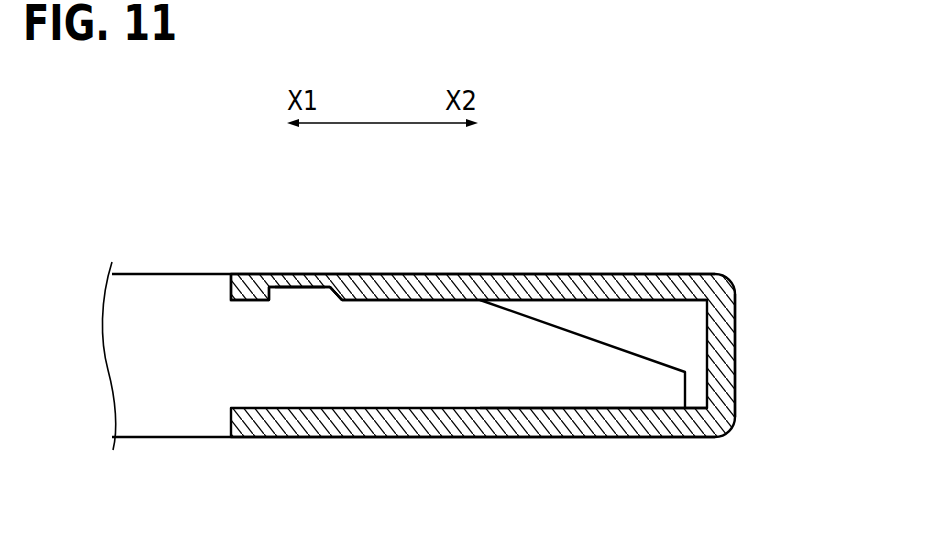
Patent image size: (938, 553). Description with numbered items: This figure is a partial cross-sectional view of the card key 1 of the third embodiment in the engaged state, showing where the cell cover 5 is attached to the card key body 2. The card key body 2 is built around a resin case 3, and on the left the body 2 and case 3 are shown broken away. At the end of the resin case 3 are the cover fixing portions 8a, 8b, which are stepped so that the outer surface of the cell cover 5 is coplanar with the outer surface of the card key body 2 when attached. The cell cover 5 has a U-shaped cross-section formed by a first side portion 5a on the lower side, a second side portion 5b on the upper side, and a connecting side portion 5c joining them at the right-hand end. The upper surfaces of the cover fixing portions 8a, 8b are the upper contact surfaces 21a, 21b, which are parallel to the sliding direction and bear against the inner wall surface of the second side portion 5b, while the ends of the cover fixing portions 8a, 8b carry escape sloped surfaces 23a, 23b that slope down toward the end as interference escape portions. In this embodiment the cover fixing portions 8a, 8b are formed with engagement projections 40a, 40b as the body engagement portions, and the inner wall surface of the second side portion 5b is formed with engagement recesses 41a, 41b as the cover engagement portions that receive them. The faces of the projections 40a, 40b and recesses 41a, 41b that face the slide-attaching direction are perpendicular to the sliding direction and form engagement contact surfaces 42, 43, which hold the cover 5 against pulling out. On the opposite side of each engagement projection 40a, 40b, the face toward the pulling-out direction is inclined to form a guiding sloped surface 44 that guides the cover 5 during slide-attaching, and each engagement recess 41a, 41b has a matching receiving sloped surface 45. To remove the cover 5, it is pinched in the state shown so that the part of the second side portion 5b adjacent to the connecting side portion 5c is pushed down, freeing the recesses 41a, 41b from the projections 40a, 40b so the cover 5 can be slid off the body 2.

The card key 1 is at (740, 208).
The card key body 2 is at (163, 314).
The resin case 3 is at (163, 270).
The cell cover 5 is at (660, 258).
The first side portion 5a is at (438, 438).
The second side portion 5b is at (508, 274).
The connecting side portion 5c is at (736, 350).
The cover fixing portion 8a is at (593, 447).
The cover fixing portion 8b is at (543, 383).
The upper contact surface 21a is at (524, 249).
The upper contact surface 21b is at (425, 298).
The escape sloped surface 23a is at (582, 292).
The escape sloped surface 23b is at (583, 335).
The engagement projection 40a is at (302, 410).
The engagement projection 40b is at (302, 292).
The engagement recess 41a is at (333, 242).
The engagement recess 41b is at (300, 287).
The engagement contact surface 42 is at (270, 295).
The engagement contact surface 43 is at (252, 283).
The guiding sloped surface 44 is at (330, 297).
The receiving sloped surface 45 is at (352, 290).